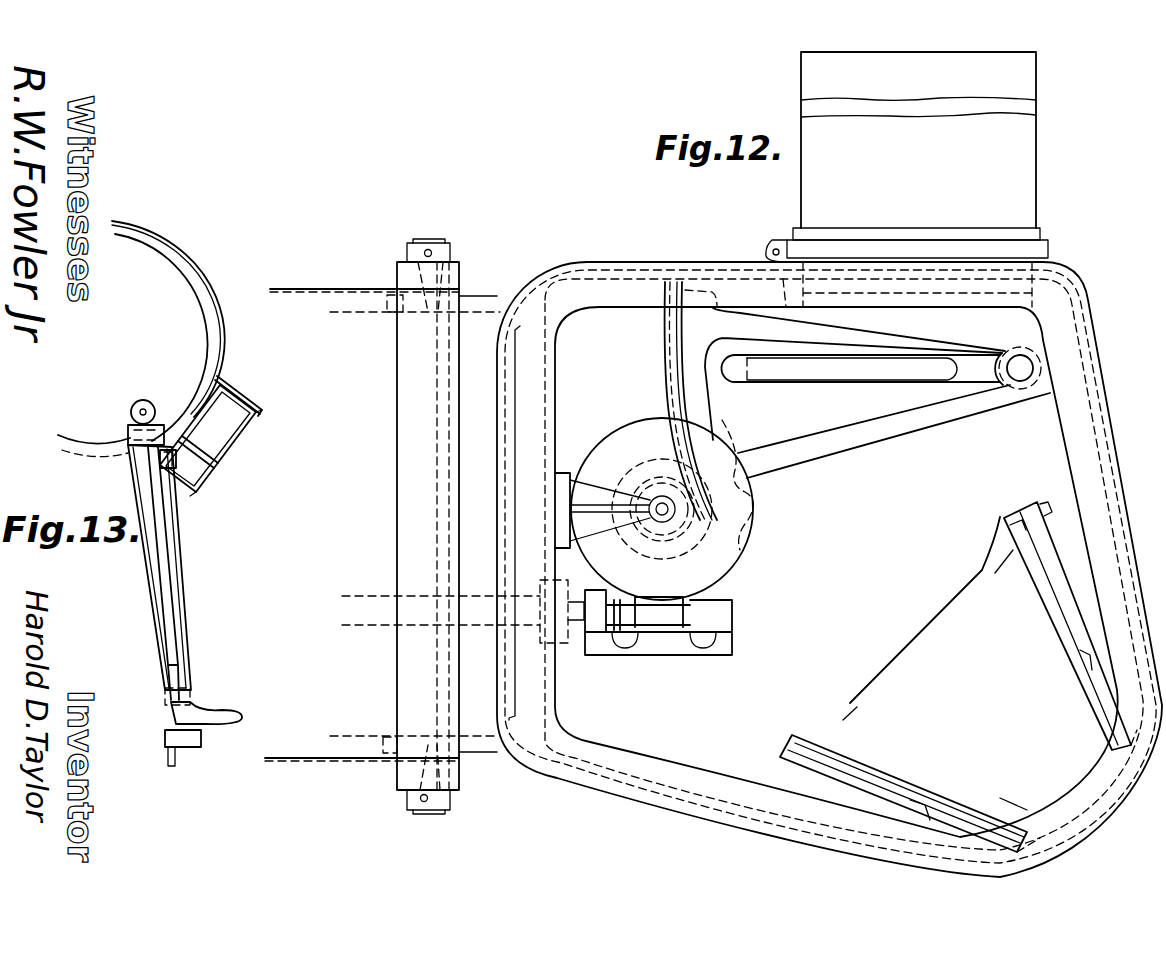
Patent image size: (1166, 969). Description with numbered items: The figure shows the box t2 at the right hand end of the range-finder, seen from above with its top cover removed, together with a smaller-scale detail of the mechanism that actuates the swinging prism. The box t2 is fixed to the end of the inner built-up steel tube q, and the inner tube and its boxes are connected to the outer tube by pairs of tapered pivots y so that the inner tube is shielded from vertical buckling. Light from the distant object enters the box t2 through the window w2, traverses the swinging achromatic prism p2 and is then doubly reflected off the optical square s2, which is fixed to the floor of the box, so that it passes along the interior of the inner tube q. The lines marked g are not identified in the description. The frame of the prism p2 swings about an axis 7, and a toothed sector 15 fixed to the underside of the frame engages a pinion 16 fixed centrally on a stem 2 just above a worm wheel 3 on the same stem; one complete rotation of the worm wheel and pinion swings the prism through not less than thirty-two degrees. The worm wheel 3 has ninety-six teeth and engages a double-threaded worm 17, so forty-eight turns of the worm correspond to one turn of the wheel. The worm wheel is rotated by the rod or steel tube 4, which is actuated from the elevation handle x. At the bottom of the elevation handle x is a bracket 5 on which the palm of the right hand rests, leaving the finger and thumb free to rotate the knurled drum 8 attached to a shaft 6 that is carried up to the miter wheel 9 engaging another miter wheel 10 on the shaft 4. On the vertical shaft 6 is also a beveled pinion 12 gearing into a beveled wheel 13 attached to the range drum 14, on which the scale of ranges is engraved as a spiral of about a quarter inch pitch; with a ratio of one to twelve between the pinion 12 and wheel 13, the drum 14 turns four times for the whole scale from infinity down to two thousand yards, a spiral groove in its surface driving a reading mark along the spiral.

In FIG. 12, the box t2 is at (1120, 493).
In FIG. 12, the window w2 is at (956, 286).
In FIG. 12, the tapered pivots y is at (446, 272).
In FIG. 12, the guide line g is at (329, 276).
In FIG. 12, the inner built-up steel tube q is at (353, 736).
In FIG. 12, the rod or steel tube 4 is at (352, 627).
In FIG. 12, the stem 2 is at (658, 507).
In FIG. 12, the pinion 16 is at (690, 532).
In FIG. 12, the toothed sector 15 is at (664, 384).
In FIG. 12, the worm wheel 3 is at (572, 552).
In FIG. 12, the worm 17 is at (658, 622).
In FIG. 12, the swinging achromatic prism p2 is at (842, 373).
In FIG. 12, the axis 7 is at (1021, 368).
In FIG. 12, the optical square s2 is at (958, 677).
In FIG. 13, the miter wheel 10 is at (150, 406).
In FIG. 13, the miter wheel 9 is at (130, 428).
In FIG. 13, the elevation handle x is at (143, 561).
In FIG. 13, the shaft 6 is at (163, 531).
In FIG. 13, the beveled pinion 12 is at (158, 462).
In FIG. 13, the beveled wheel 13 is at (232, 397).
In FIG. 13, the range drum 14 is at (249, 412).
In FIG. 13, the bracket 5 is at (220, 711).
In FIG. 13, the knurled drum 8 is at (201, 737).